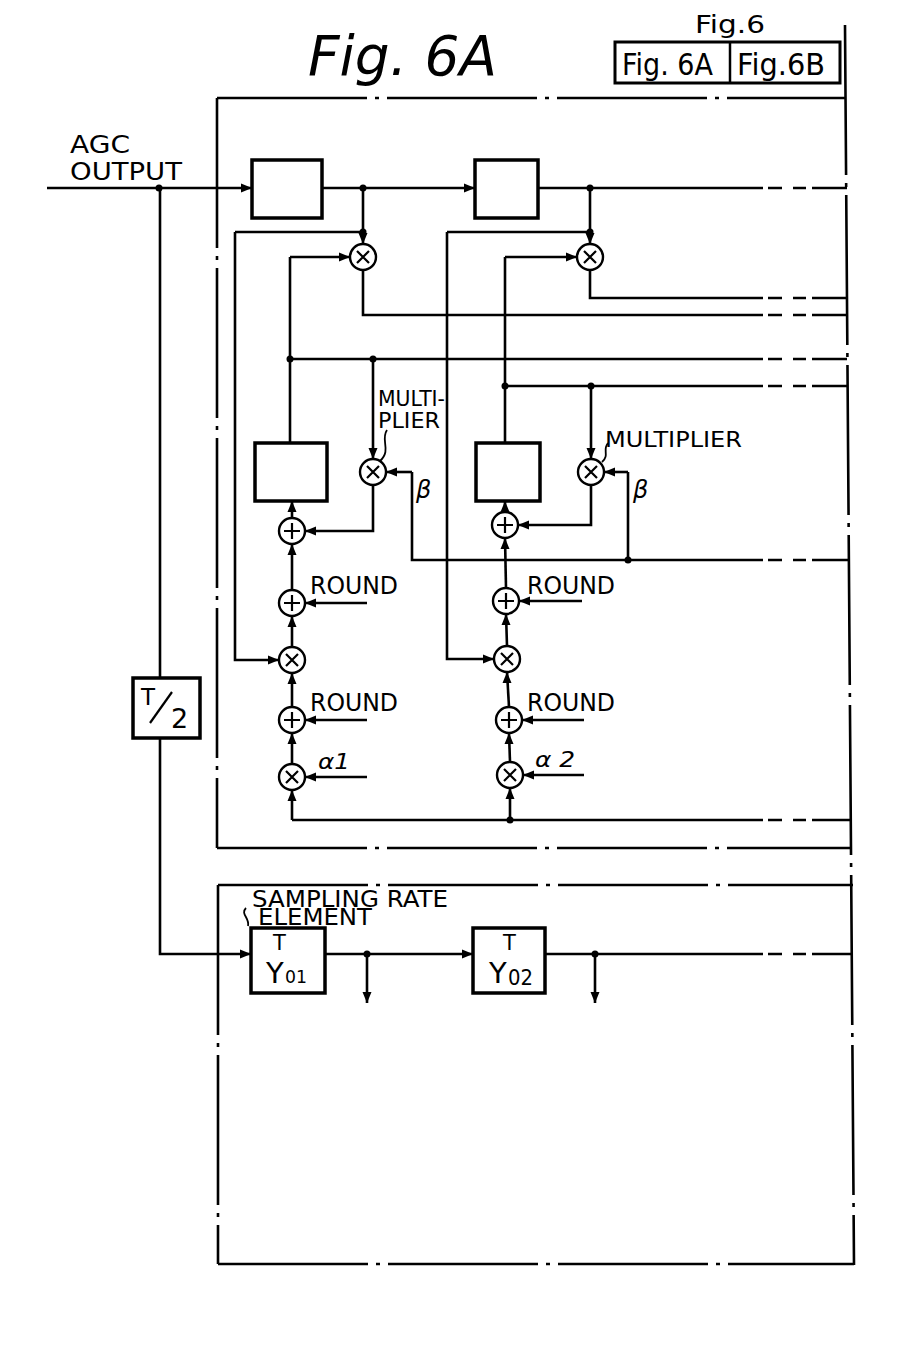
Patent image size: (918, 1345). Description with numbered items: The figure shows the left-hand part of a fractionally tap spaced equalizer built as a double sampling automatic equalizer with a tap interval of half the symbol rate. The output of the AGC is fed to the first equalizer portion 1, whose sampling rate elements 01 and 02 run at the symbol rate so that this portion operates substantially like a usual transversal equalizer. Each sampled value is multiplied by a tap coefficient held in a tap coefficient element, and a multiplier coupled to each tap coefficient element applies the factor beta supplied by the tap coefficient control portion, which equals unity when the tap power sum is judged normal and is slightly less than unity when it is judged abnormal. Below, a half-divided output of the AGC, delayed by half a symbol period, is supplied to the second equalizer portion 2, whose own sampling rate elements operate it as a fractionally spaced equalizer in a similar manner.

The sampling rate element X01 01 is at (323, 164).
The sampling rate element X02 02 is at (506, 190).
The first equalizer portion 1 is at (186, 446).
The second equalizer portion 2 is at (508, 472).